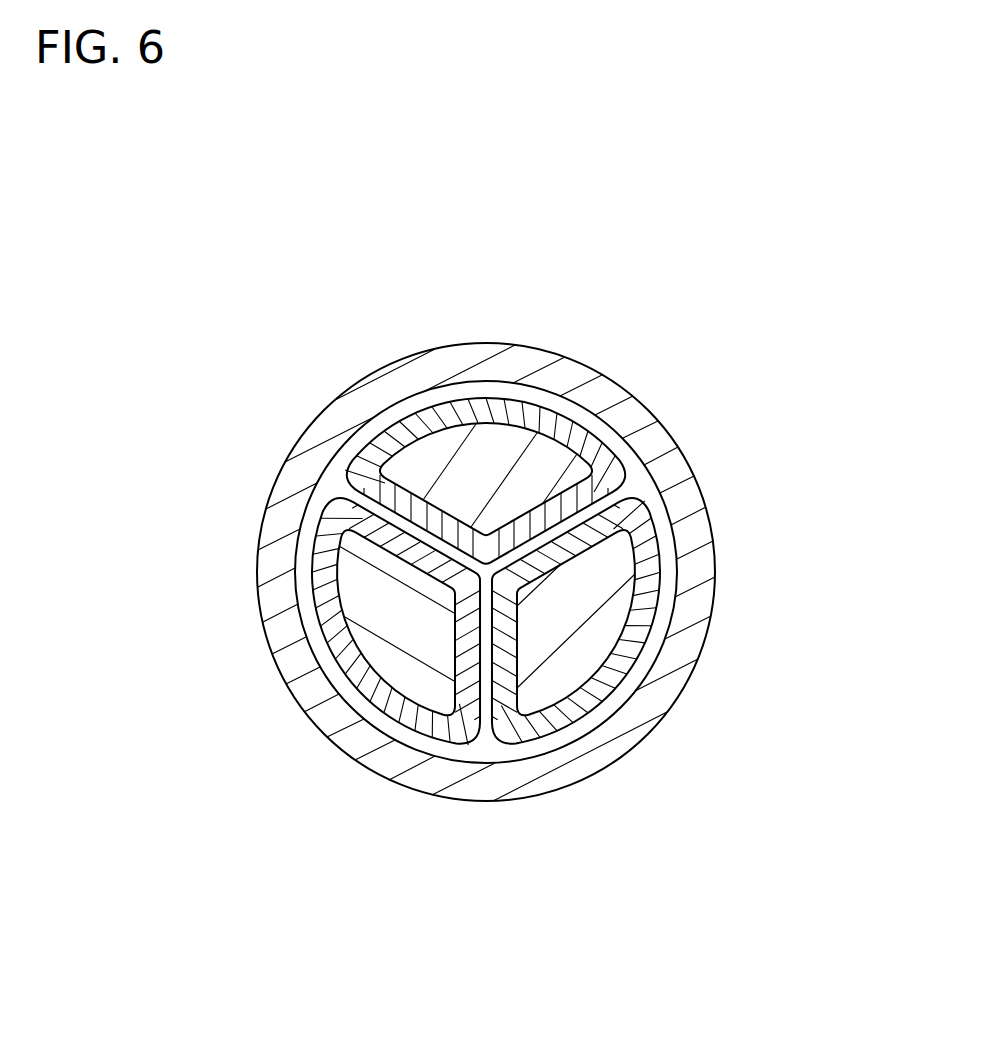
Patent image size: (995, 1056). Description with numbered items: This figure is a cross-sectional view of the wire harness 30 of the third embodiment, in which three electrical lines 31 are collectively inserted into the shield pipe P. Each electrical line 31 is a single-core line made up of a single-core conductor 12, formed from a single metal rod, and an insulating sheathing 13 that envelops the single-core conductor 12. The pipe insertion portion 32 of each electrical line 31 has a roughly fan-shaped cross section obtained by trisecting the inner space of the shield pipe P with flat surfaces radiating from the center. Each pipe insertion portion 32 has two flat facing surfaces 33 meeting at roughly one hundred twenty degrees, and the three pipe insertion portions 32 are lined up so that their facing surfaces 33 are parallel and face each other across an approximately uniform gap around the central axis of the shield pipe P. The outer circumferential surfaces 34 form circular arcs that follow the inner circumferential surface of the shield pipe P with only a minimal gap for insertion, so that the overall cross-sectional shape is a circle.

The shield pipe P is at (613, 400).
The wire harness 30 is at (552, 388).
The electrical line 31 is at (418, 593).
The pipe insertion portion 32 is at (436, 594).
The facing surface 33 is at (325, 502).
The outer circumferential surface 34 is at (536, 530).
The single-core conductor 12 is at (553, 693).
The insulating sheathing 13 is at (597, 693).